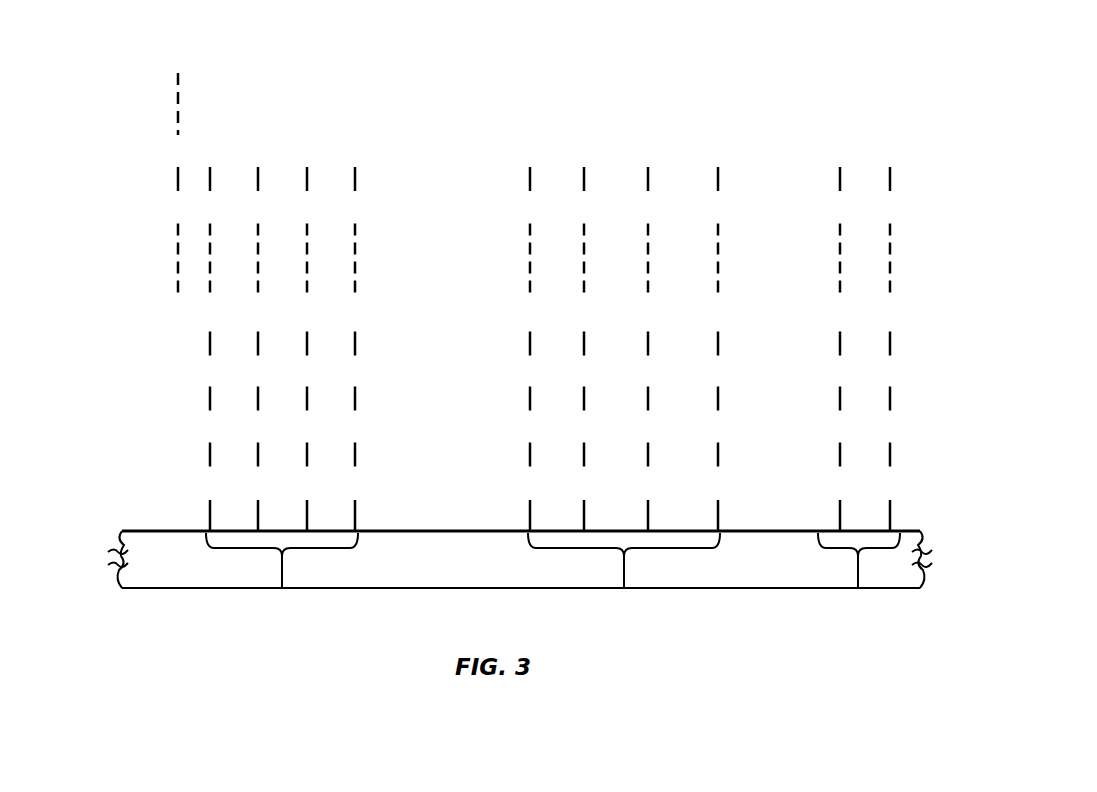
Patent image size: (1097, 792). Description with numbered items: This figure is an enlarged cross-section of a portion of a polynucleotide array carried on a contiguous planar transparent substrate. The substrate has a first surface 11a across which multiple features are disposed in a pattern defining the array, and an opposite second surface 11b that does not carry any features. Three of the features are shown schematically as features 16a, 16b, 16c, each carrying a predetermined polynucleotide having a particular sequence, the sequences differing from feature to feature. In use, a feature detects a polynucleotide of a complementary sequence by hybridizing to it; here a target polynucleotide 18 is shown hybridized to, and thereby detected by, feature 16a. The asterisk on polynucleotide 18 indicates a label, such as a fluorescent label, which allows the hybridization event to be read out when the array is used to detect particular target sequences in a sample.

The first surface 11a is at (150, 531).
The second surface 11b is at (152, 588).
The feature 16a is at (280, 590).
The feature 16b is at (622, 590).
The feature 16c is at (856, 590).
The polynucleotide 18 is at (178, 107).